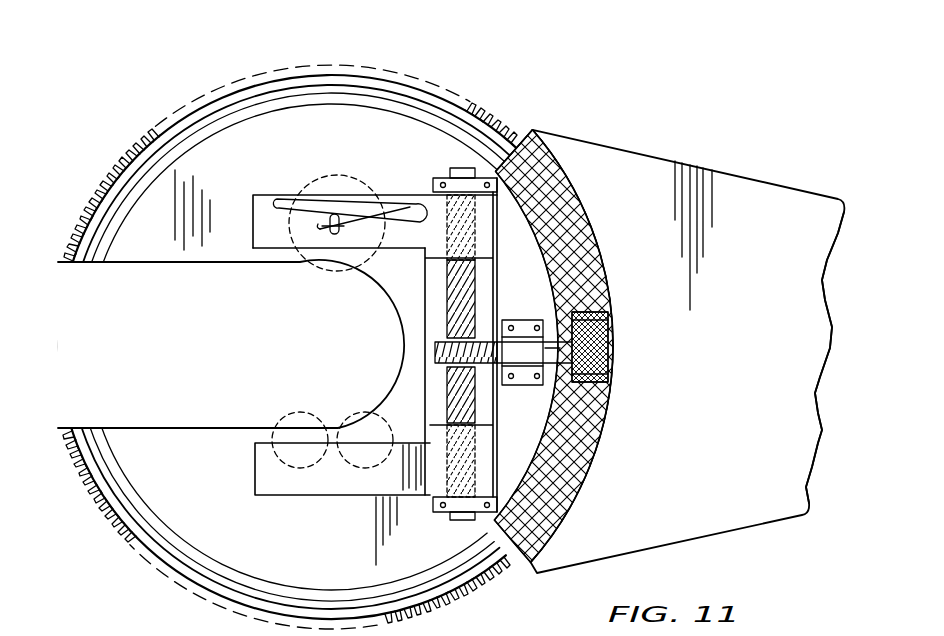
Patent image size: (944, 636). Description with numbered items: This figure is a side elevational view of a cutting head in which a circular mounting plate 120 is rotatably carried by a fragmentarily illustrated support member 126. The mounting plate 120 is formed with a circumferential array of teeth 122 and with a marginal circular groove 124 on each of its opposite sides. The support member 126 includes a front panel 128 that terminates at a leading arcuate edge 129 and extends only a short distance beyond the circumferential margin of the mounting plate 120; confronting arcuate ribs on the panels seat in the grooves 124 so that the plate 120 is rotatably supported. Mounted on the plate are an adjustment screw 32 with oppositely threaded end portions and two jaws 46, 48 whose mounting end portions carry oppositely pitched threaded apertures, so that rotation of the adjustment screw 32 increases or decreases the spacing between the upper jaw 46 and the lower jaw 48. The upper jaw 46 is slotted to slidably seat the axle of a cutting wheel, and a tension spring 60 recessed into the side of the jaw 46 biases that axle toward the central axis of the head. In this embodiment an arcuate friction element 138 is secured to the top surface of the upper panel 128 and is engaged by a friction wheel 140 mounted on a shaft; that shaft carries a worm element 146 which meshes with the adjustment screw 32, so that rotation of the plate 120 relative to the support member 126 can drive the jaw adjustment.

The mounting plate 120 is at (150, 129).
The teeth 122 is at (127, 537).
The marginal circular groove 124 is at (423, 109).
The support member 126 is at (703, 169).
The front panel 128 is at (780, 428).
The leading arcuate edge 129 is at (523, 203).
The arcuate friction element 138 is at (602, 440).
The friction wheel 140 is at (608, 328).
The worm element 146 is at (433, 350).
The adjustment screw 32 is at (466, 288).
The upper jaw 46 is at (262, 210).
The lower jaw 48 is at (326, 484).
The tension spring 60 is at (388, 205).